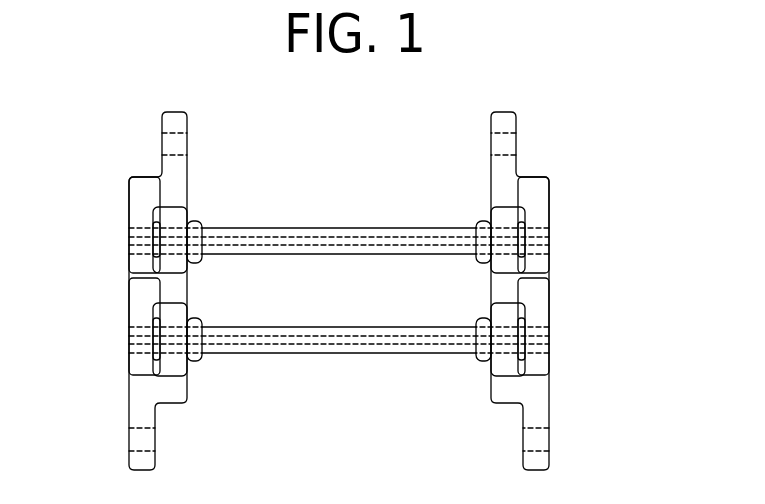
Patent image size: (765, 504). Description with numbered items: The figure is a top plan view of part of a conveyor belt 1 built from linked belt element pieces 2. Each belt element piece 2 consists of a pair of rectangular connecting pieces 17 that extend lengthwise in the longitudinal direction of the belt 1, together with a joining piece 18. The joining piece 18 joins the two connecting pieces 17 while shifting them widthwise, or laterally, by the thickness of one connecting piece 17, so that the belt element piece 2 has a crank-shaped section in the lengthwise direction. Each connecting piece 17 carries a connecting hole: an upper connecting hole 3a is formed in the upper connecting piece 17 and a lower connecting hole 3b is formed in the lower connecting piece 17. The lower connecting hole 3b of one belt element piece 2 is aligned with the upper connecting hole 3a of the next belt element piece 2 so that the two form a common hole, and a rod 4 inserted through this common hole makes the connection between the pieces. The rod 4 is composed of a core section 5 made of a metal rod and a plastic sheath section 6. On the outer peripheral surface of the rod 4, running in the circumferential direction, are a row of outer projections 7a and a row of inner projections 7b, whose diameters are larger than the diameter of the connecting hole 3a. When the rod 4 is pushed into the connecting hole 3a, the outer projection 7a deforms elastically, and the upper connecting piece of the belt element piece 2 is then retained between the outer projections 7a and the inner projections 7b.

The conveyor belt 1 is at (338, 188).
The belt element piece 2 is at (542, 182).
The upper connecting hole 3a is at (172, 148).
The lower connecting hole 3b is at (133, 240).
The rod 4 is at (262, 348).
The core section 5 is at (328, 340).
The sheath section 6 is at (338, 252).
The outer projection 7a is at (158, 230).
The inner projection 7b is at (194, 255).
The connecting piece 17 is at (512, 122).
The joining piece 18 is at (509, 191).